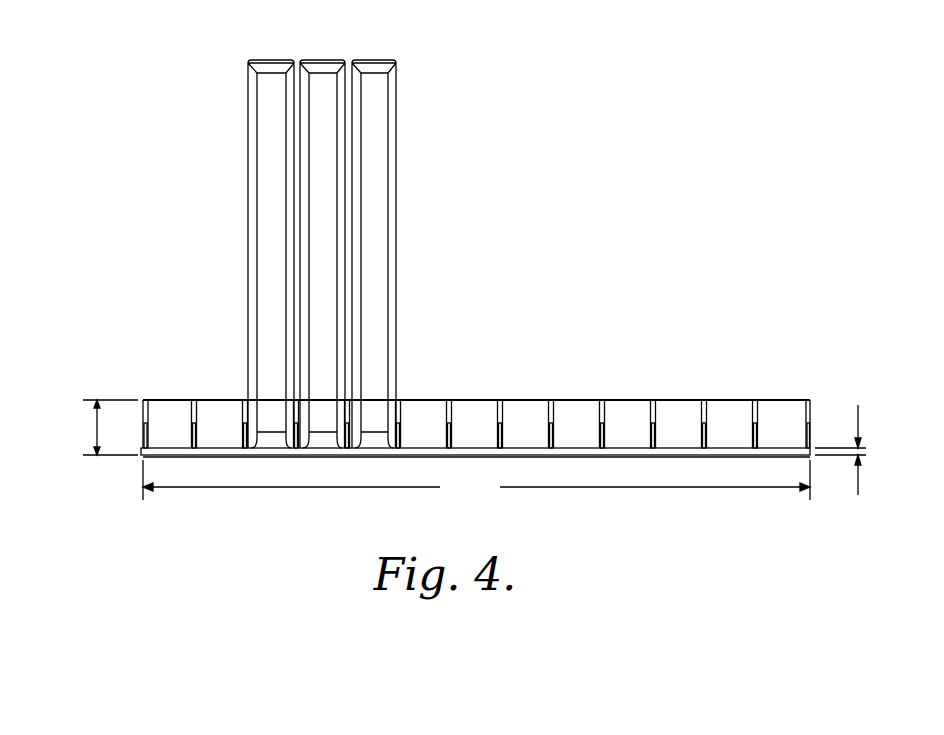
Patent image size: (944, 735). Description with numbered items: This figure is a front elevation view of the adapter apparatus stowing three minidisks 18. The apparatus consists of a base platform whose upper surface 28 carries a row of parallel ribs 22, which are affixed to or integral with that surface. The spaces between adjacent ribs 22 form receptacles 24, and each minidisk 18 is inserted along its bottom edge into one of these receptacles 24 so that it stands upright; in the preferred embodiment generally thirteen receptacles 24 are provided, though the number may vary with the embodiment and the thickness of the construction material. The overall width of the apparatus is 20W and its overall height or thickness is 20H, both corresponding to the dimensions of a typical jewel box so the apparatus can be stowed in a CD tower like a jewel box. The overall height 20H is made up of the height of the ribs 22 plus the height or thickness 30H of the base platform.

The minidisk 18 is at (272, 68).
The parallel ribs 22 is at (655, 396).
The receptacles 24 is at (475, 418).
The upper surface 28 is at (170, 452).
The height of adapter apparatus 20H is at (94, 428).
The width of adapter apparatus 20W is at (476, 480).
The height of base platform 30H is at (846, 462).